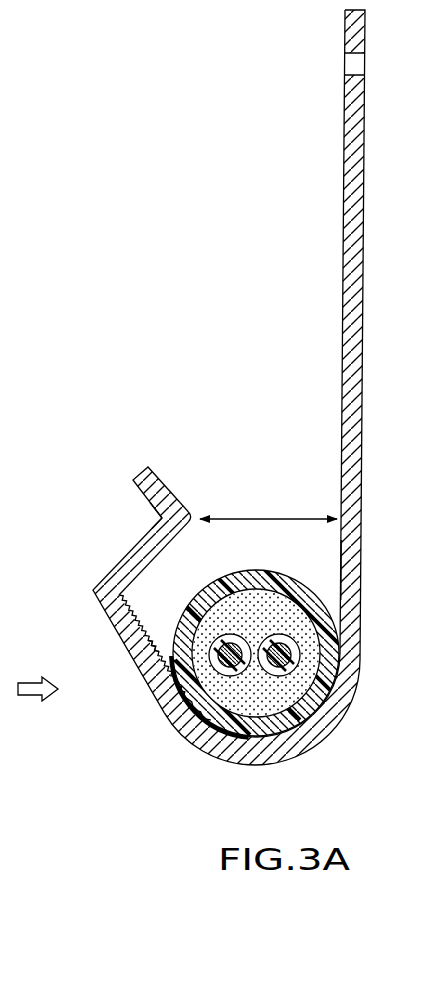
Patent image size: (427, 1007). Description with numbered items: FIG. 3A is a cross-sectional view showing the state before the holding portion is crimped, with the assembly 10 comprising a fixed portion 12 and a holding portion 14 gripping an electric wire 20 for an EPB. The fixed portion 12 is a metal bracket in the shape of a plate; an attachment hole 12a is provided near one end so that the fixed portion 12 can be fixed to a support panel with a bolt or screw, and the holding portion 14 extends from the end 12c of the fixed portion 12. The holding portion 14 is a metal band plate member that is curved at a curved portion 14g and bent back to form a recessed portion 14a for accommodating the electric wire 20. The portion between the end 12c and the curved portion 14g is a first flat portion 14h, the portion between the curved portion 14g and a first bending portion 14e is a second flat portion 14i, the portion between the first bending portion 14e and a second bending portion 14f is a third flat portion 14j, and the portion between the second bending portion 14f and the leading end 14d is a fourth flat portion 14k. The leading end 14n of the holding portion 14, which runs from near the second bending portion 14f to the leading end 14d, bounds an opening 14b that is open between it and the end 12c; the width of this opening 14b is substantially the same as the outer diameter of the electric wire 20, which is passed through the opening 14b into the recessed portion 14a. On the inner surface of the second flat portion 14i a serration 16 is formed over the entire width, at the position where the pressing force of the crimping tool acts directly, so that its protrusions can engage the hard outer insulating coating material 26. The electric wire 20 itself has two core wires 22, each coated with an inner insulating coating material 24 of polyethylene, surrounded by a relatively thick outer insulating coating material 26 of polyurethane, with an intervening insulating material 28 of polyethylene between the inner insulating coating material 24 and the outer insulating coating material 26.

The cable holding structure 10 is at (289, 252).
The fixed portion 12 is at (363, 296).
The attachment hole 12a is at (356, 68).
The end of the fixed portion 12c is at (343, 557).
The holding portion 14 is at (189, 729).
The recessed portion 14a is at (224, 761).
The opening 14b is at (253, 497).
The leading end 14d is at (135, 473).
The first bending portion 14e is at (93, 591).
The second bending portion 14f is at (160, 518).
The curved portion 14g is at (275, 765).
The first flat portion 14h is at (361, 648).
The second flat portion 14i is at (148, 665).
The third flat portion 14j is at (128, 554).
The fourth flat portion 14k is at (164, 482).
The leading end of the holding portion 14n is at (196, 504).
The serration 16 is at (156, 645).
The electric wire for an EPB 20 is at (172, 619).
The core wire 22 is at (231, 647).
The inner insulating coating material 24 is at (213, 640).
The outer insulating coating material 26 is at (315, 602).
The intervening insulating material 28 is at (243, 600).